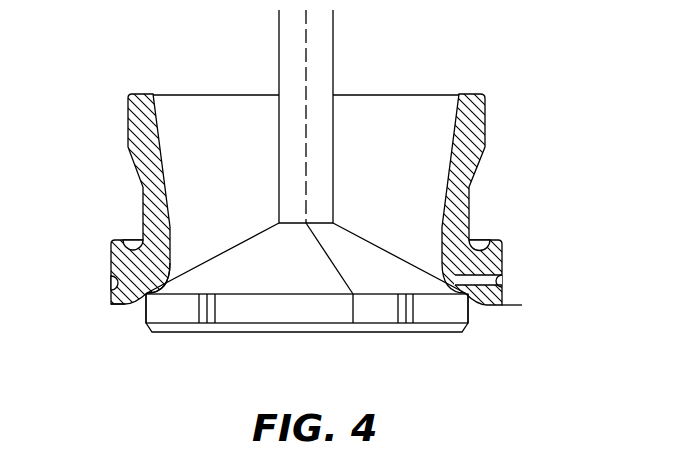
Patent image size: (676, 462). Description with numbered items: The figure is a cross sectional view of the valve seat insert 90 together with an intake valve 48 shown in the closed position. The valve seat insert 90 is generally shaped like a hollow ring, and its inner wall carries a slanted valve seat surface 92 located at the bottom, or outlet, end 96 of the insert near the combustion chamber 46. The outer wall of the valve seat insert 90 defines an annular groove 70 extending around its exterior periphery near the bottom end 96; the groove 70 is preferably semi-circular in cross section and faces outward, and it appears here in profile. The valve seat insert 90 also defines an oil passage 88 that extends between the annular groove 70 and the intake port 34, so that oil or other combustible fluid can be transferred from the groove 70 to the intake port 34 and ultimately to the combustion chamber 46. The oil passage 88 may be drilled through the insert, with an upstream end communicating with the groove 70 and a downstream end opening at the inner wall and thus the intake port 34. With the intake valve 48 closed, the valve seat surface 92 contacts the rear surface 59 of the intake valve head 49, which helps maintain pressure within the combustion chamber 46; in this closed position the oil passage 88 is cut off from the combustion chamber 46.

The valve seat insert 90 is at (512, 57).
The intake valve 48 is at (333, 67).
The intake port 34 is at (432, 147).
The oil passage 88 is at (483, 282).
The annular groove 70 is at (110, 287).
The rear surface 59 is at (223, 253).
The bottom end 96 is at (111, 307).
The intake valve head 49 is at (145, 306).
The valve seat surface 92 is at (148, 296).
The combustion chamber 46 is at (320, 374).